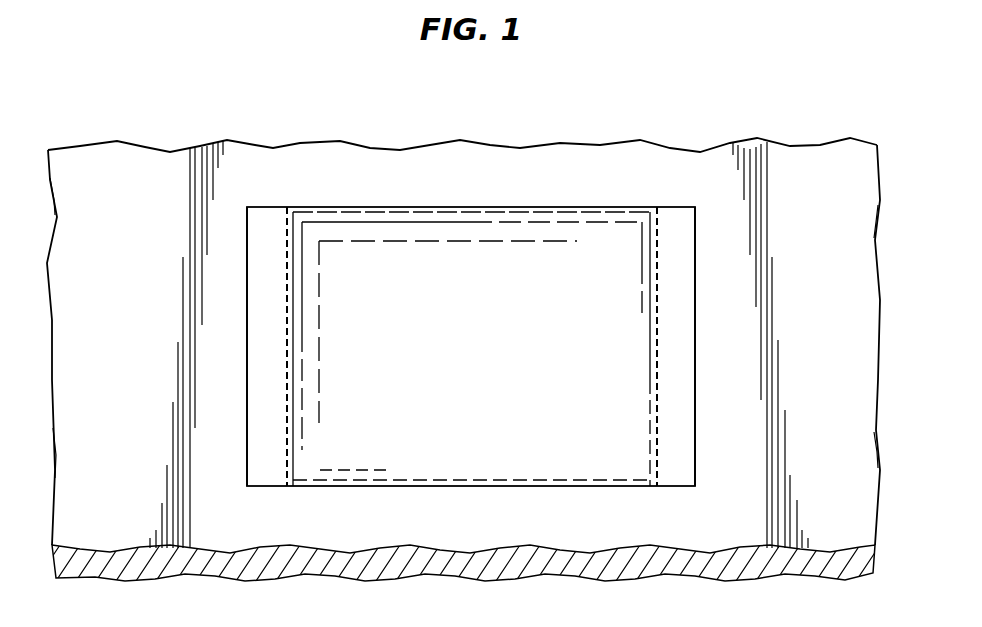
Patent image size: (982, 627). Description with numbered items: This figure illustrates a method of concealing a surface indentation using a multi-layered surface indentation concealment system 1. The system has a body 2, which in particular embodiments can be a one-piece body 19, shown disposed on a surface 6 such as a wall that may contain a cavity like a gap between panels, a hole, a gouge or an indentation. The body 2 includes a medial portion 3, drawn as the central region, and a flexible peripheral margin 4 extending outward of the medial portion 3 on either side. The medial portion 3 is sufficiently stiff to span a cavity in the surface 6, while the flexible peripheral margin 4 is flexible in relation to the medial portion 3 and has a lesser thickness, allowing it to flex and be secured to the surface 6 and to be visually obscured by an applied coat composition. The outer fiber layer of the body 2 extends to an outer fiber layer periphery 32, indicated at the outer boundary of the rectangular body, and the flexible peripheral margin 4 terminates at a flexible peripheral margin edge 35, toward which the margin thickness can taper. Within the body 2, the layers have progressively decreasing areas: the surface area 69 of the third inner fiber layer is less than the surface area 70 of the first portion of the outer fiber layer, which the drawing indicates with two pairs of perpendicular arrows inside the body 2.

The multi-layered surface indentation concealment system 1 is at (437, 505).
The body 2 is at (720, 313).
The one-piece body 19 is at (603, 470).
The medial portion 3 is at (658, 194).
The flexible peripheral margin 4 is at (288, 194).
The surface 6 is at (805, 197).
The outer fiber layer periphery 32 is at (716, 419).
The flexible peripheral margin edge 35 is at (247, 369).
The surface area of the third inner fiber layer 69 is at (385, 425).
The surface area of the first portion of the outer fiber layer 70 is at (349, 480).